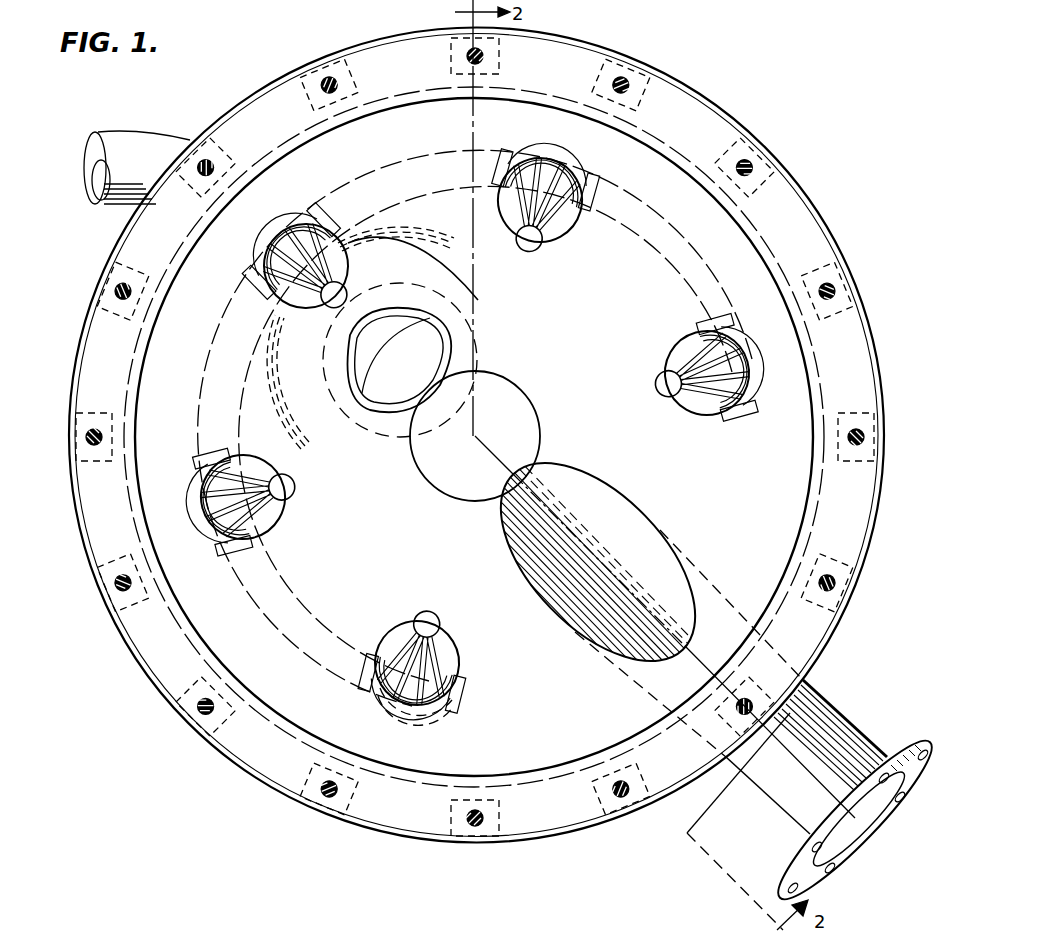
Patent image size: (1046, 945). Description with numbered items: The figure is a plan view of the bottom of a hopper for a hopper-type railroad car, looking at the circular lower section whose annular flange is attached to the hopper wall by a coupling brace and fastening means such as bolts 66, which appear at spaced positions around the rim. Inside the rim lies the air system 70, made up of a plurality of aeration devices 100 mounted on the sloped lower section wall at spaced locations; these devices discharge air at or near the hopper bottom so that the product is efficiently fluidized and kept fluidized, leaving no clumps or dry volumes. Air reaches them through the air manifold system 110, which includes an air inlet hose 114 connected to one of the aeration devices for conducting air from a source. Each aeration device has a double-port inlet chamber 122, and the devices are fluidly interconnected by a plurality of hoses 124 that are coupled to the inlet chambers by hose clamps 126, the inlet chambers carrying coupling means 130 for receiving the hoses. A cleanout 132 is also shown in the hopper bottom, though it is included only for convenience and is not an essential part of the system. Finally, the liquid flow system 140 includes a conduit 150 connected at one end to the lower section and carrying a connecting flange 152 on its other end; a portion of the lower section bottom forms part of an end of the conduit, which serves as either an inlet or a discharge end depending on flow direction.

The bolts 66 is at (122, 312).
The air system 70 is at (323, 618).
The aeration devices 100 is at (515, 250).
The air manifold system 110 is at (266, 586).
The air inlet hose 114 is at (128, 152).
The double-port inlet chamber 122 is at (276, 220).
The hoses 124 is at (372, 178).
The hose clamps 126 is at (581, 200).
The coupling means 130 is at (392, 740).
The cleanout 132 is at (350, 432).
The liquid flow system 140 is at (627, 482).
The conduit 150 is at (838, 735).
The connecting flange 152 is at (900, 752).